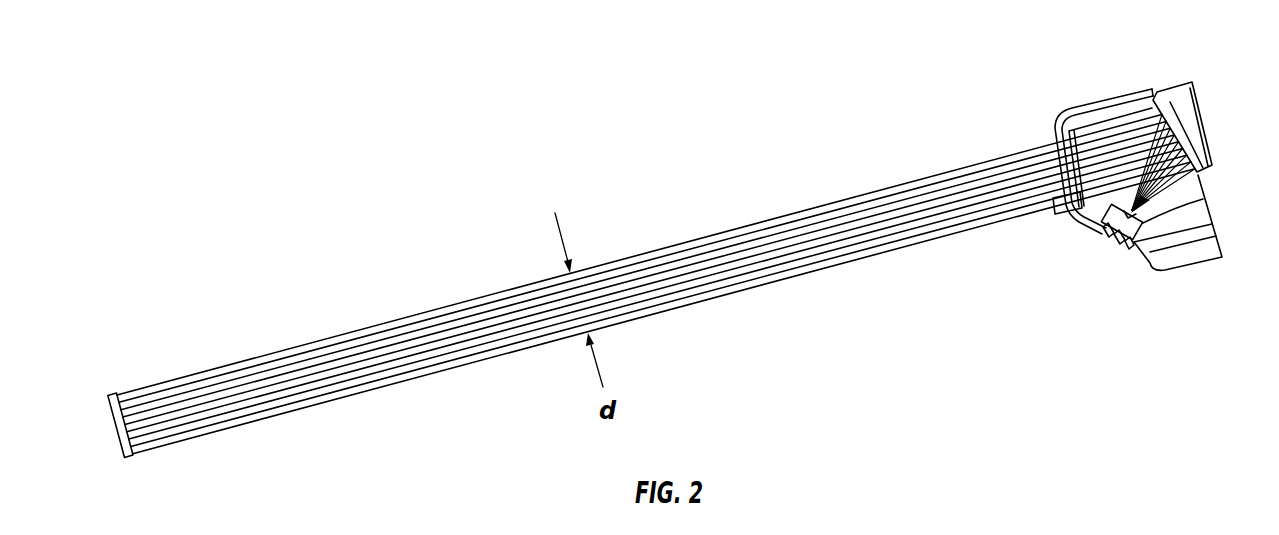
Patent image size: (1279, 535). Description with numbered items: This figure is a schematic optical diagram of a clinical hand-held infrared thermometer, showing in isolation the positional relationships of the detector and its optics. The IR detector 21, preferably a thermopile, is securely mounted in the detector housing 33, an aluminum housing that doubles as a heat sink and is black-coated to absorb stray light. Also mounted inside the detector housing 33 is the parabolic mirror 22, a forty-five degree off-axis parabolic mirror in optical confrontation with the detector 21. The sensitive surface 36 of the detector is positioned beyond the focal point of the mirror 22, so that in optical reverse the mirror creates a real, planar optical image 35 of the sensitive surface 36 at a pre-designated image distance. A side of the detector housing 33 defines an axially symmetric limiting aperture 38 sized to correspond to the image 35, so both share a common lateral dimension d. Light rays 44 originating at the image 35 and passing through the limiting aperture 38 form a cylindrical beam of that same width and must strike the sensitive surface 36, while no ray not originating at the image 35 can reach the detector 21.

The IR detector 21 is at (1125, 249).
The parabolic mirror 22 is at (1186, 136).
The detector housing 33 is at (1113, 95).
The optical image 35 is at (108, 396).
The sensitive surface 36 is at (1188, 197).
The limiting aperture 38 is at (1057, 142).
The light rays 44 is at (950, 172).